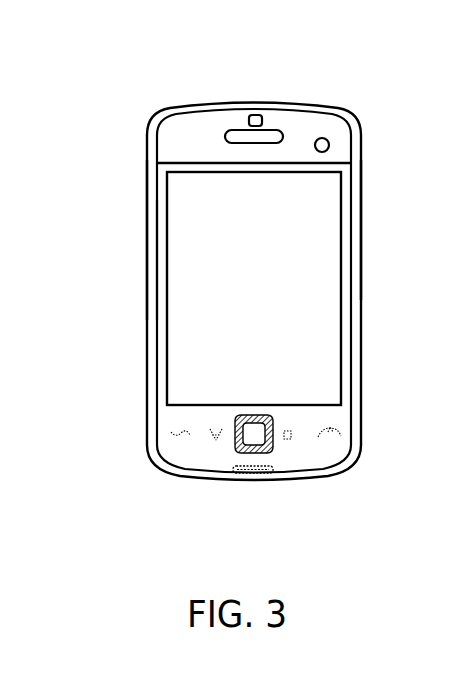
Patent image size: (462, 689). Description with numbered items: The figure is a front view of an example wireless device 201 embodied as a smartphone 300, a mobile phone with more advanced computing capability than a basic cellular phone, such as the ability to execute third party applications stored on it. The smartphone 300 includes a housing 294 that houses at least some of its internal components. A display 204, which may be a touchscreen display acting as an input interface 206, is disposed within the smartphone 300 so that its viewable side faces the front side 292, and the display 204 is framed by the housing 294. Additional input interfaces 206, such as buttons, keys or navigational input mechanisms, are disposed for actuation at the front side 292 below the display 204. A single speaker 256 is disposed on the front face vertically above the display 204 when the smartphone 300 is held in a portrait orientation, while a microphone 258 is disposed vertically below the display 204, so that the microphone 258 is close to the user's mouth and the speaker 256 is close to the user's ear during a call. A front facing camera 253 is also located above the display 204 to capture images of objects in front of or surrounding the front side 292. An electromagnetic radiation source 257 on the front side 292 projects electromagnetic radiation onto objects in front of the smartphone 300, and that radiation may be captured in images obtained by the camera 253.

The smartphone 300 is at (136, 95).
The wireless device 201 is at (188, 78).
The display 204 is at (160, 242).
The input interface 206 is at (160, 308).
The housing 294 is at (363, 183).
The front facing camera 253 is at (255, 111).
The speaker 256 is at (276, 128).
The electromagnetic radiation source 257 is at (320, 136).
The front side 292 is at (163, 415).
The microphone 258 is at (265, 477).